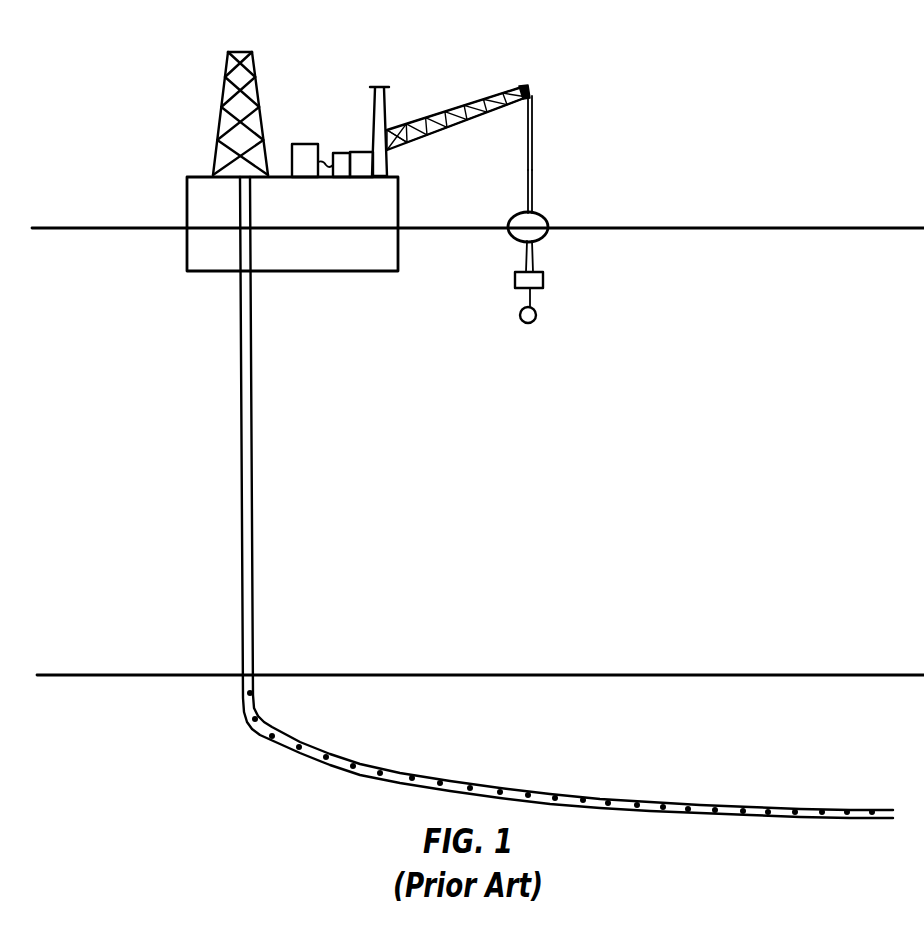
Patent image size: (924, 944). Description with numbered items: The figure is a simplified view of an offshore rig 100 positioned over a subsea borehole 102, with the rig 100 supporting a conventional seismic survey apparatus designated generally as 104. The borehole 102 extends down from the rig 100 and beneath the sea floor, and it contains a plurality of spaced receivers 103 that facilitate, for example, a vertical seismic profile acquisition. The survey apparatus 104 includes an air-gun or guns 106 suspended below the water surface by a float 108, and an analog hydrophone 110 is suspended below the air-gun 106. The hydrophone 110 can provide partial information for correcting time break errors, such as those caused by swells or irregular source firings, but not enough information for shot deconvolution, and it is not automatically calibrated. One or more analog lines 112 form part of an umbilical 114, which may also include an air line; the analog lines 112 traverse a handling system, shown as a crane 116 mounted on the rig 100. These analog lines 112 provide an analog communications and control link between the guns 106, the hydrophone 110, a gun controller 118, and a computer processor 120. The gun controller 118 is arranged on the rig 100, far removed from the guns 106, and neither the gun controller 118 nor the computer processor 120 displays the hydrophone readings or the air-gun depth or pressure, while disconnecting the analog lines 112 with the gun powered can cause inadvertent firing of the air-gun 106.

The offshore rig 100 is at (188, 200).
The subsea borehole 102 is at (315, 746).
The spaced receivers 103 is at (353, 766).
The seismic survey apparatus 104 is at (617, 99).
The air-gun 106 is at (515, 276).
The float 108 is at (545, 237).
The analog hydrophone 110 is at (536, 316).
The analog lines 112 is at (533, 183).
The umbilical 114 is at (527, 160).
The crane 116 is at (440, 114).
The gun controller 118 is at (337, 152).
The computer processor 120 is at (298, 143).